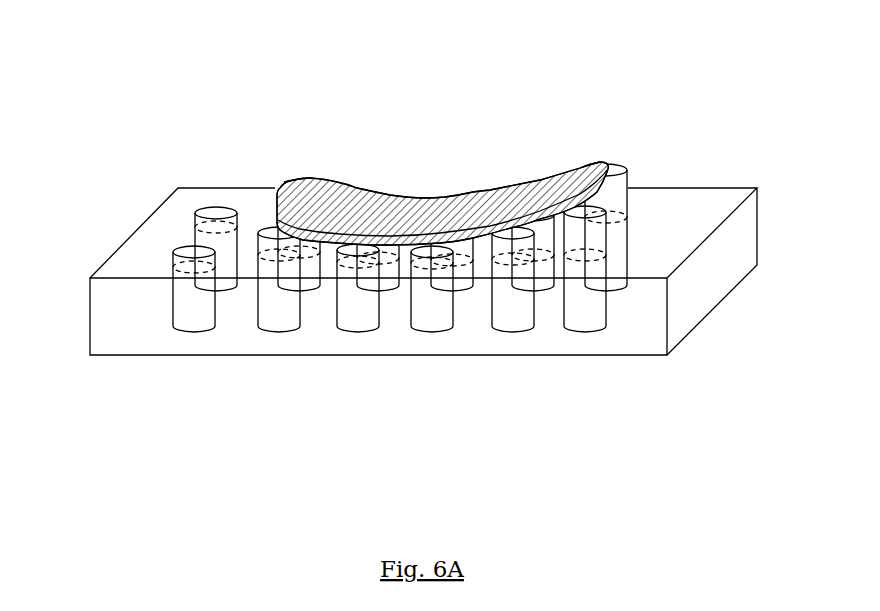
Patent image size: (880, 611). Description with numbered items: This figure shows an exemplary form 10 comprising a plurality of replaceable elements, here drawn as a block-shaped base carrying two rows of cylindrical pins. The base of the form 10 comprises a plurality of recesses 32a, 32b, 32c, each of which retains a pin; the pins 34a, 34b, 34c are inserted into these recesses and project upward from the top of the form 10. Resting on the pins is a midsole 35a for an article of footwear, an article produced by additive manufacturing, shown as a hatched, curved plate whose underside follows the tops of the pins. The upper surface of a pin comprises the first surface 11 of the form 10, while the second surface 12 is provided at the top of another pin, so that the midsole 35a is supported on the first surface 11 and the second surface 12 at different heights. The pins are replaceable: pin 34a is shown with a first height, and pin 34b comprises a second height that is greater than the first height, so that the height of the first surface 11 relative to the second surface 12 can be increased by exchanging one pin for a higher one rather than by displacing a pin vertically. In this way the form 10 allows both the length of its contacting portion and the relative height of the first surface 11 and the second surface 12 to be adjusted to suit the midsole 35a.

The form 10 is at (90, 135).
The first surface 11 is at (289, 181).
The second surface 12 is at (613, 170).
The recess 32a is at (216, 254).
The recess 32b is at (299, 242).
The recess 32c is at (606, 256).
The pin 34a is at (212, 214).
The pin 34b is at (302, 180).
The pin 34c is at (600, 161).
The midsole 35a is at (472, 192).